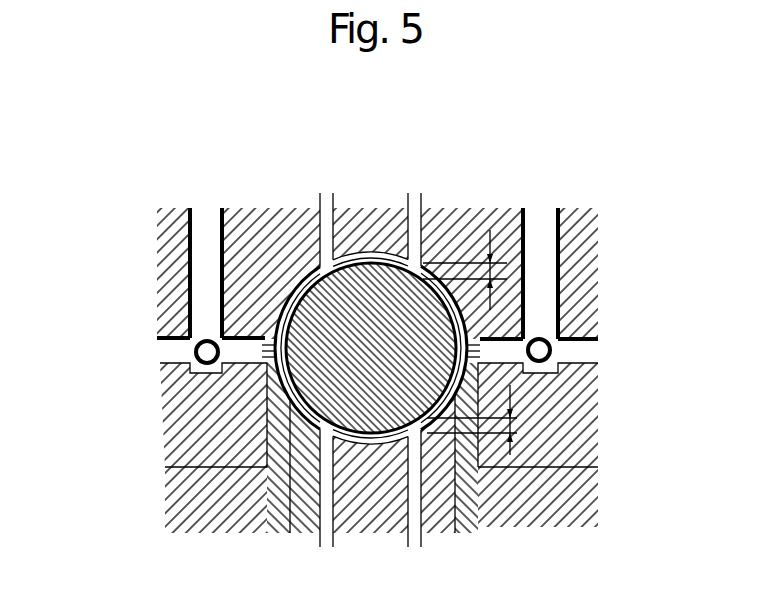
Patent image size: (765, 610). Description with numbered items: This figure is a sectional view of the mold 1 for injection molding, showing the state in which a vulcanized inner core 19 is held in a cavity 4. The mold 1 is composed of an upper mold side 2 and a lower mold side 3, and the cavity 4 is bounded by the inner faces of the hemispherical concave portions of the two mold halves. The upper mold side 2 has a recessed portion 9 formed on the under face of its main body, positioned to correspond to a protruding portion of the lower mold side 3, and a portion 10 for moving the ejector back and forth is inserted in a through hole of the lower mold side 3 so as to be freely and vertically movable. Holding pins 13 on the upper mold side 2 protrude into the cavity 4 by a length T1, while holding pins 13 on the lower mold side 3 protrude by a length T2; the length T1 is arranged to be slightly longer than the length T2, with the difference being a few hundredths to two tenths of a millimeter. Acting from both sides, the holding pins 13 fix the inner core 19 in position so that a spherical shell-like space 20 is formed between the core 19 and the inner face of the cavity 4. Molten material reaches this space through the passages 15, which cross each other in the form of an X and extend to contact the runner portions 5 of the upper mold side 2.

The mold 1 is at (648, 312).
The upper mold side 2 is at (377, 257).
The lower mold side 3 is at (560, 507).
The cavity 4 is at (279, 312).
The runner portion 5 is at (207, 366).
The recessed portion 9 is at (272, 437).
The portion for moving back and forth of the ejector 10 is at (455, 490).
The holding pin 13 is at (410, 218).
The passage 15 is at (202, 256).
The inner core 19 is at (386, 365).
The spherical shell-like space 20 is at (284, 302).
The protruding length of upper holding pins T1 is at (490, 250).
The protruding length of lower holding pins T2 is at (517, 427).